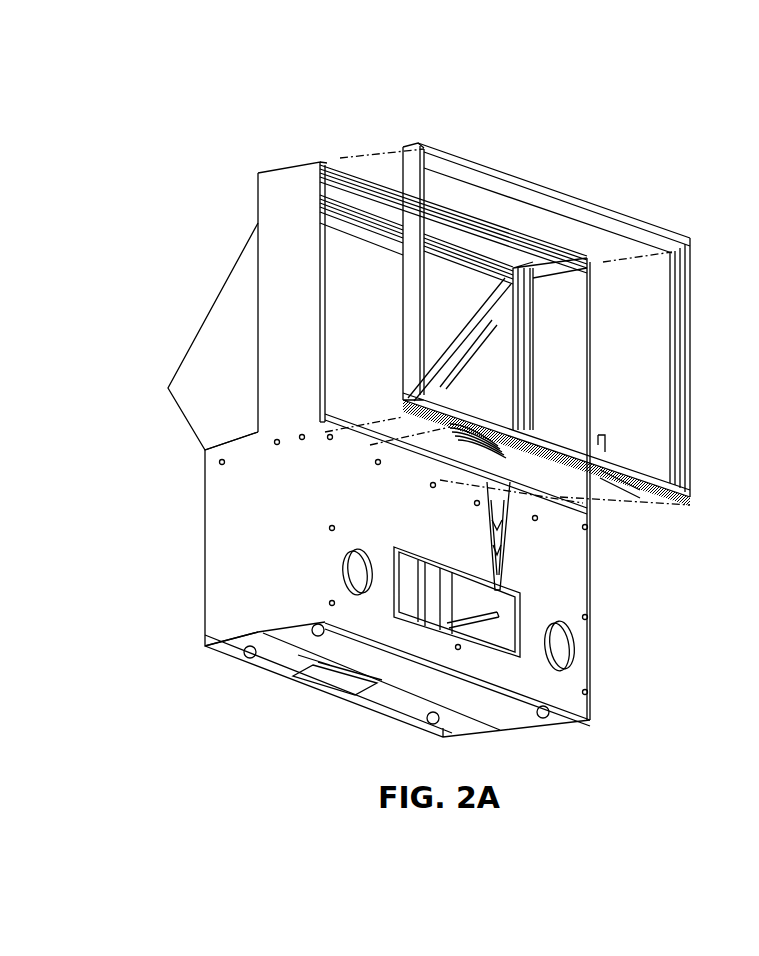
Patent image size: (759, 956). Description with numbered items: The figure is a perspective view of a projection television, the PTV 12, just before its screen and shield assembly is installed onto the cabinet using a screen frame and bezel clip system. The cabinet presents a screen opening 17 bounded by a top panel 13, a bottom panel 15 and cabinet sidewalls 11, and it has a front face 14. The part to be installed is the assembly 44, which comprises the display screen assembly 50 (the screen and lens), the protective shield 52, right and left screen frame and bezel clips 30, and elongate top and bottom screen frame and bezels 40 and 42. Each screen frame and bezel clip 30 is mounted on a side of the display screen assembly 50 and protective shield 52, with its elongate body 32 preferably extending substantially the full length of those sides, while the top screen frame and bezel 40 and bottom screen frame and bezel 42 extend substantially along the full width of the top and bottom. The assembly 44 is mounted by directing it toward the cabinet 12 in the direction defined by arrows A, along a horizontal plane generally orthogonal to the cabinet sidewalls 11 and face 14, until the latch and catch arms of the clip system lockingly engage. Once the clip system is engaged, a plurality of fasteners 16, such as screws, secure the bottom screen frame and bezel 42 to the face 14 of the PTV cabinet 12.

The cabinet sidewall 11 is at (293, 187).
The PTV 12 is at (256, 207).
The top panel 13 is at (333, 158).
The face 14 is at (560, 583).
The bottom panel 15 is at (405, 460).
The fasteners 16 is at (627, 492).
The screen opening 17 is at (332, 277).
The screen frame and bezel clip 30 is at (404, 277).
The elongate body 32 is at (401, 335).
The top screen frame and bezel 40 is at (603, 212).
The bottom screen frame and bezel 42 is at (683, 500).
The assembly 44 is at (671, 219).
The display screen assembly 50 is at (653, 296).
The protective shield 52 is at (665, 284).
The arrows A is at (623, 253).